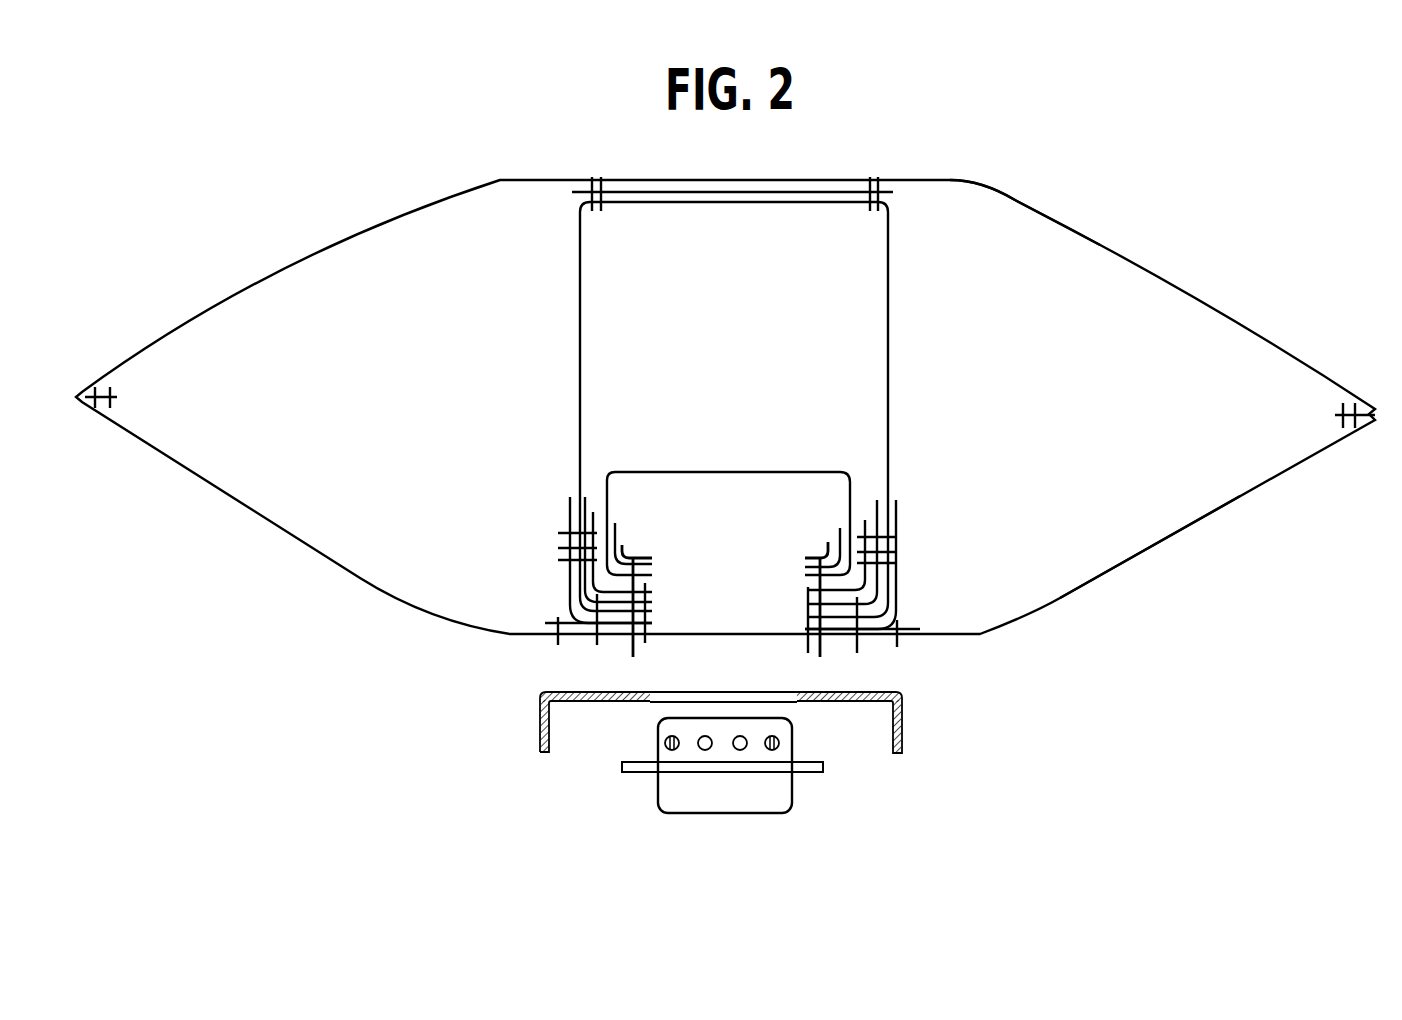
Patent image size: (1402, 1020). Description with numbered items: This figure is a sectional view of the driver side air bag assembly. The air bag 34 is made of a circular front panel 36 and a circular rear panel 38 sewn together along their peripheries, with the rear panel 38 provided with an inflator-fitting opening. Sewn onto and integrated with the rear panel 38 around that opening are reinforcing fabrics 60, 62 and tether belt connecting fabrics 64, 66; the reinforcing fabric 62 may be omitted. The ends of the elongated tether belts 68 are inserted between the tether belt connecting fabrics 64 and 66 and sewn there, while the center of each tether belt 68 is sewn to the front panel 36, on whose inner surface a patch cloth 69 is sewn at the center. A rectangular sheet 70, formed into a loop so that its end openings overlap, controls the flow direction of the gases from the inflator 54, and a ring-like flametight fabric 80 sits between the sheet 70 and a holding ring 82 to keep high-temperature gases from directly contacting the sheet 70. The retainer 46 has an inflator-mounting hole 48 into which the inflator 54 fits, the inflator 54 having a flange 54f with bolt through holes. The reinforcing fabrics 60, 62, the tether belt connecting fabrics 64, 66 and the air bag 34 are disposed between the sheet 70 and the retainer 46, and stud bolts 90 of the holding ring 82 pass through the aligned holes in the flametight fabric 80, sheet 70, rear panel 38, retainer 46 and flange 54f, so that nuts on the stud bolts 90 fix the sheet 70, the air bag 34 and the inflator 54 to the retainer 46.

The air bag 34 is at (1097, 222).
The front panel 36 is at (1022, 198).
The rear panel 38 is at (1175, 543).
The retainer 46 is at (903, 732).
The inflator-mounting hole 48 is at (734, 691).
The inflator 54 is at (806, 807).
The flange 54f is at (823, 773).
The reinforcing fabric 60 is at (554, 623).
The reinforcing fabric 62 is at (865, 520).
The tether belt connecting fabric 64 is at (569, 500).
The tether belt connecting fabric 66 is at (594, 510).
The tether belt 68 is at (581, 357).
The patch cloth 69 is at (898, 203).
The sheet 70 is at (667, 472).
The flametight fabric 80 is at (617, 524).
The holding ring 82 is at (638, 549).
The stud bolt 90 is at (638, 649).